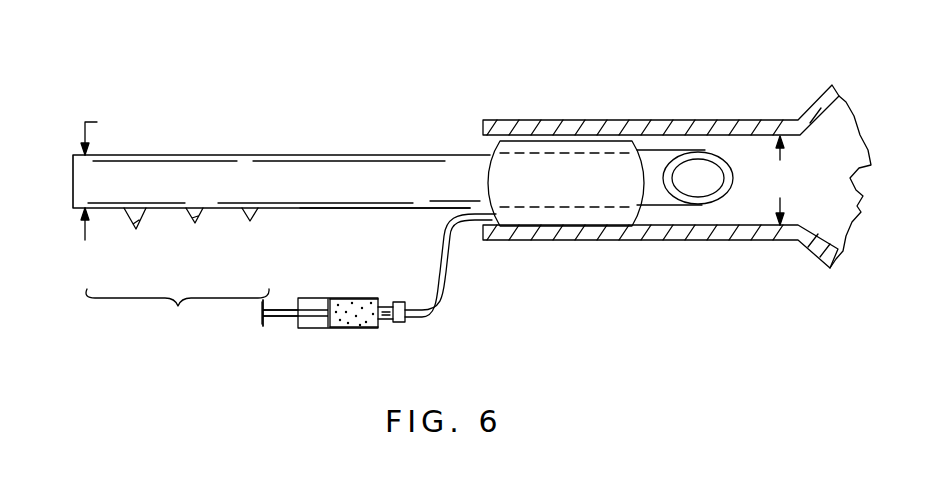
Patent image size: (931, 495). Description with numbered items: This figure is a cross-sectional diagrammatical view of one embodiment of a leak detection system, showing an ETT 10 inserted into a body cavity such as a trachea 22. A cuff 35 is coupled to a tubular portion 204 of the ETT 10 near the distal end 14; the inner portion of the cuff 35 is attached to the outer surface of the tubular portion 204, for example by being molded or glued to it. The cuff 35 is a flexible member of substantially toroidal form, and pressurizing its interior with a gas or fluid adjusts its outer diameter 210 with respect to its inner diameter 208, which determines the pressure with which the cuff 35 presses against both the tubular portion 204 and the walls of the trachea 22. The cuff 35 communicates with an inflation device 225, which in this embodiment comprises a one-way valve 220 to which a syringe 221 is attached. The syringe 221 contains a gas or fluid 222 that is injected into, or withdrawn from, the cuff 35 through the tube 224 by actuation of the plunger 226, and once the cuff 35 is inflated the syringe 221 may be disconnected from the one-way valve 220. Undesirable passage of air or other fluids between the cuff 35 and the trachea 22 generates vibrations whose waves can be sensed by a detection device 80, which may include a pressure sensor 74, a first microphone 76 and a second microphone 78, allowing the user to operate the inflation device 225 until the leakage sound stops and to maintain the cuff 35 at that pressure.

The ETT 10 is at (308, 155).
The distal end 14 is at (698, 150).
The trachea 22 is at (757, 233).
The cuff 35 is at (482, 140).
The pressure sensor 74 is at (136, 229).
The first microphone 76 is at (250, 221).
The second microphone 78 is at (195, 223).
The detection device 80 is at (178, 306).
The tubular portion 204 is at (375, 208).
The inner diameter 208 is at (119, 171).
The outer diameter 210 is at (785, 180).
The one-way valve 220 is at (405, 322).
The syringe 221 is at (346, 330).
The gas or fluid 222 is at (346, 305).
The tube 224 is at (447, 268).
The inflation device 225 is at (357, 338).
The plunger 226 is at (258, 322).